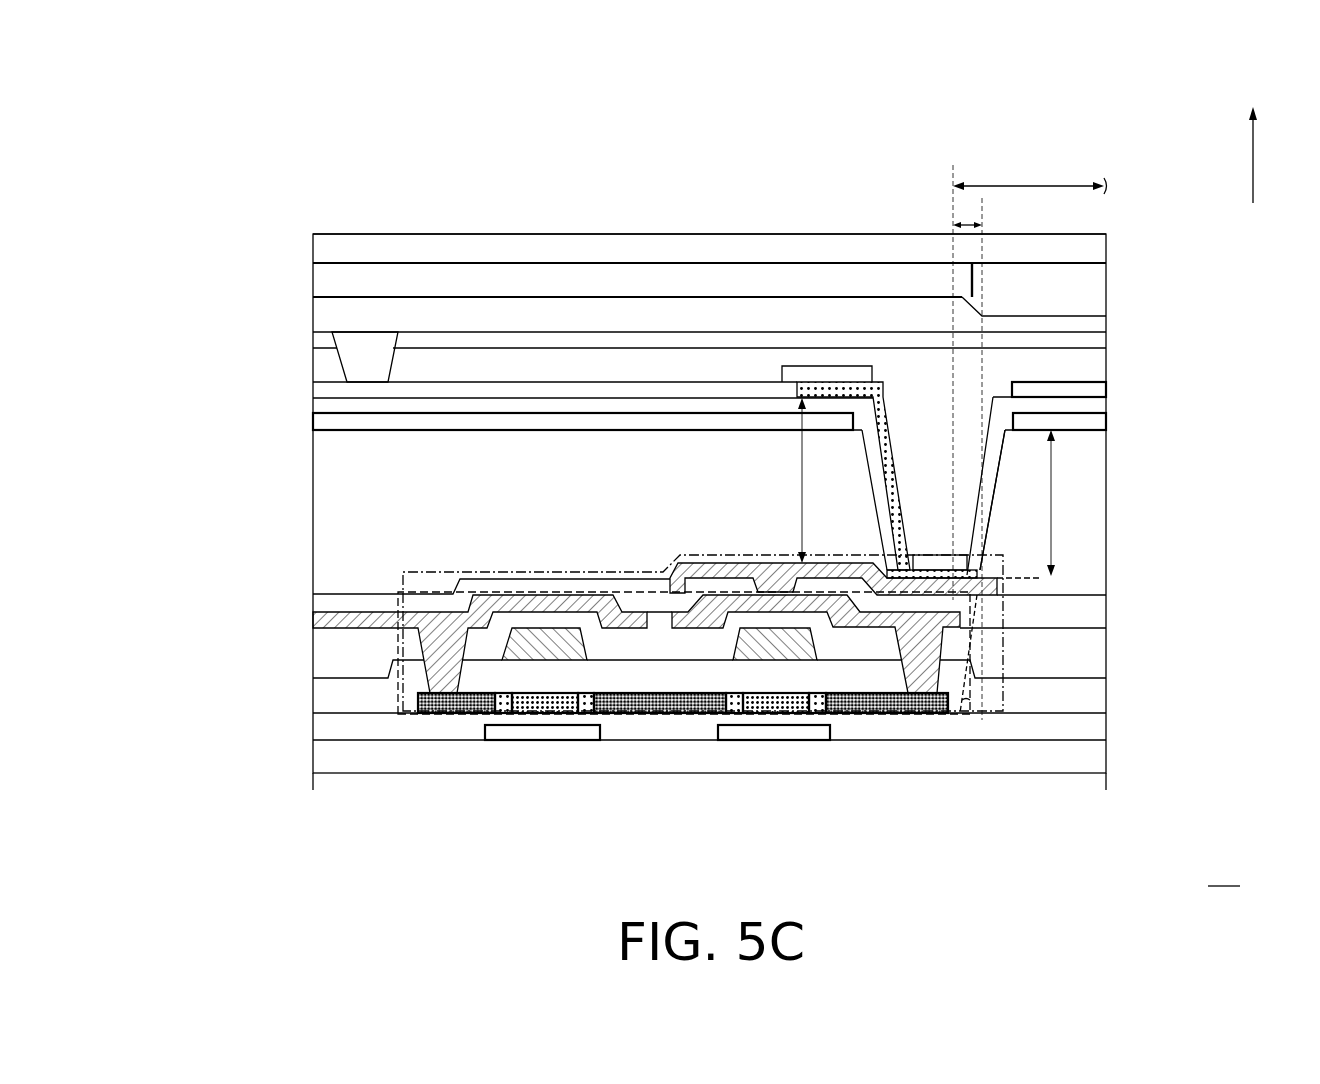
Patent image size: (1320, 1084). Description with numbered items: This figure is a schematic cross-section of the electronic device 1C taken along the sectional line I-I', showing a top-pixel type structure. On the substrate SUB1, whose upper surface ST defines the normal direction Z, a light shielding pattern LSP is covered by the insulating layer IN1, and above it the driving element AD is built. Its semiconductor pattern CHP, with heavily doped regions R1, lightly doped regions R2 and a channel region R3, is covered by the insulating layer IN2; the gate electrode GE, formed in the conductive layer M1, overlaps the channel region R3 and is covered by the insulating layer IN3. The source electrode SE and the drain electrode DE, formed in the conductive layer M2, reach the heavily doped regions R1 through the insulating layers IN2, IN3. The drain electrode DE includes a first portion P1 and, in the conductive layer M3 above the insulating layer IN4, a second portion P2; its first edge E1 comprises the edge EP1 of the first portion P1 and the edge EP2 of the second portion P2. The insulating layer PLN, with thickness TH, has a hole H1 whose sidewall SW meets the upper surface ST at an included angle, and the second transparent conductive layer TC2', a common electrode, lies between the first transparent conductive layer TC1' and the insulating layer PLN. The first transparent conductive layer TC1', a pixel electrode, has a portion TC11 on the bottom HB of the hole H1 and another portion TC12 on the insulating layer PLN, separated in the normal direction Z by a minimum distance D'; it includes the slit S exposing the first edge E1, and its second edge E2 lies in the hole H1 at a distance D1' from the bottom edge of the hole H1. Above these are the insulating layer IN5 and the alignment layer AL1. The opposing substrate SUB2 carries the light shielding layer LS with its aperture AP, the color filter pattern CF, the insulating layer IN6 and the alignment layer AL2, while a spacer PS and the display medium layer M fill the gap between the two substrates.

The driving element AD is at (208, 45).
The gate electrode GE is at (523, 369).
The semiconductor pattern CHP is at (293, 45).
The source electrode SE is at (438, 406).
The drain electrode DE is at (293, 153).
The heavily doped region R1 is at (465, 797).
The lightly doped region R2 is at (502, 797).
The channel region R3 is at (548, 797).
The first portion P1 is at (955, 810).
The second portion P2 is at (652, 384).
The conductive layer M1 is at (649, 677).
The conductive layer M2 is at (531, 509).
The conductive layer M3 is at (661, 509).
The first transparent conductive layer TC1' is at (867, 345).
The other portion of the first transparent conductive layer TC12 is at (824, 380).
The portion of the first transparent conductive layer TC11 is at (926, 560).
The second transparent conductive layer TC2' is at (706, 426).
The slit S is at (1030, 380).
The distance D1' is at (969, 459).
The minimum distance D' is at (785, 480).
The thickness TH is at (1063, 503).
The normal direction Z is at (1252, 139).
The light shielding layer LS is at (326, 276).
The spacer PS is at (345, 360).
The alignment layer AL1 is at (326, 394).
The alignment layer AL2 is at (1088, 344).
The upper surface ST is at (324, 737).
The substrate SUB2 is at (1088, 250).
The substrate SUB1 is at (1088, 763).
The aperture AP is at (985, 280).
The color filter pattern CF is at (1088, 295).
The insulating layer IN6 is at (1088, 320).
The insulating layer IN5 is at (1088, 408).
The insulating layer IN4 is at (1088, 612).
The insulating layer IN3 is at (1088, 660).
The insulating layer IN2 is at (1088, 697).
The insulating layer IN1 is at (1088, 727).
The display medium layer M is at (1088, 368).
The sidewall SW is at (1005, 477).
The hole H1 is at (937, 500).
The insulating layer PLN is at (1088, 485).
The second edge E2 is at (972, 568).
The first edge E1 is at (1177, 545).
The edge of the first portion EP1 is at (978, 621).
The edge of the second portion EP2 is at (1008, 588).
The bottom HB is at (897, 565).
The light shielding pattern LSP is at (753, 735).
The sectional line I is at (314, 799).
The sectional line I' is at (1102, 799).
The electronic device 1C is at (1224, 873).